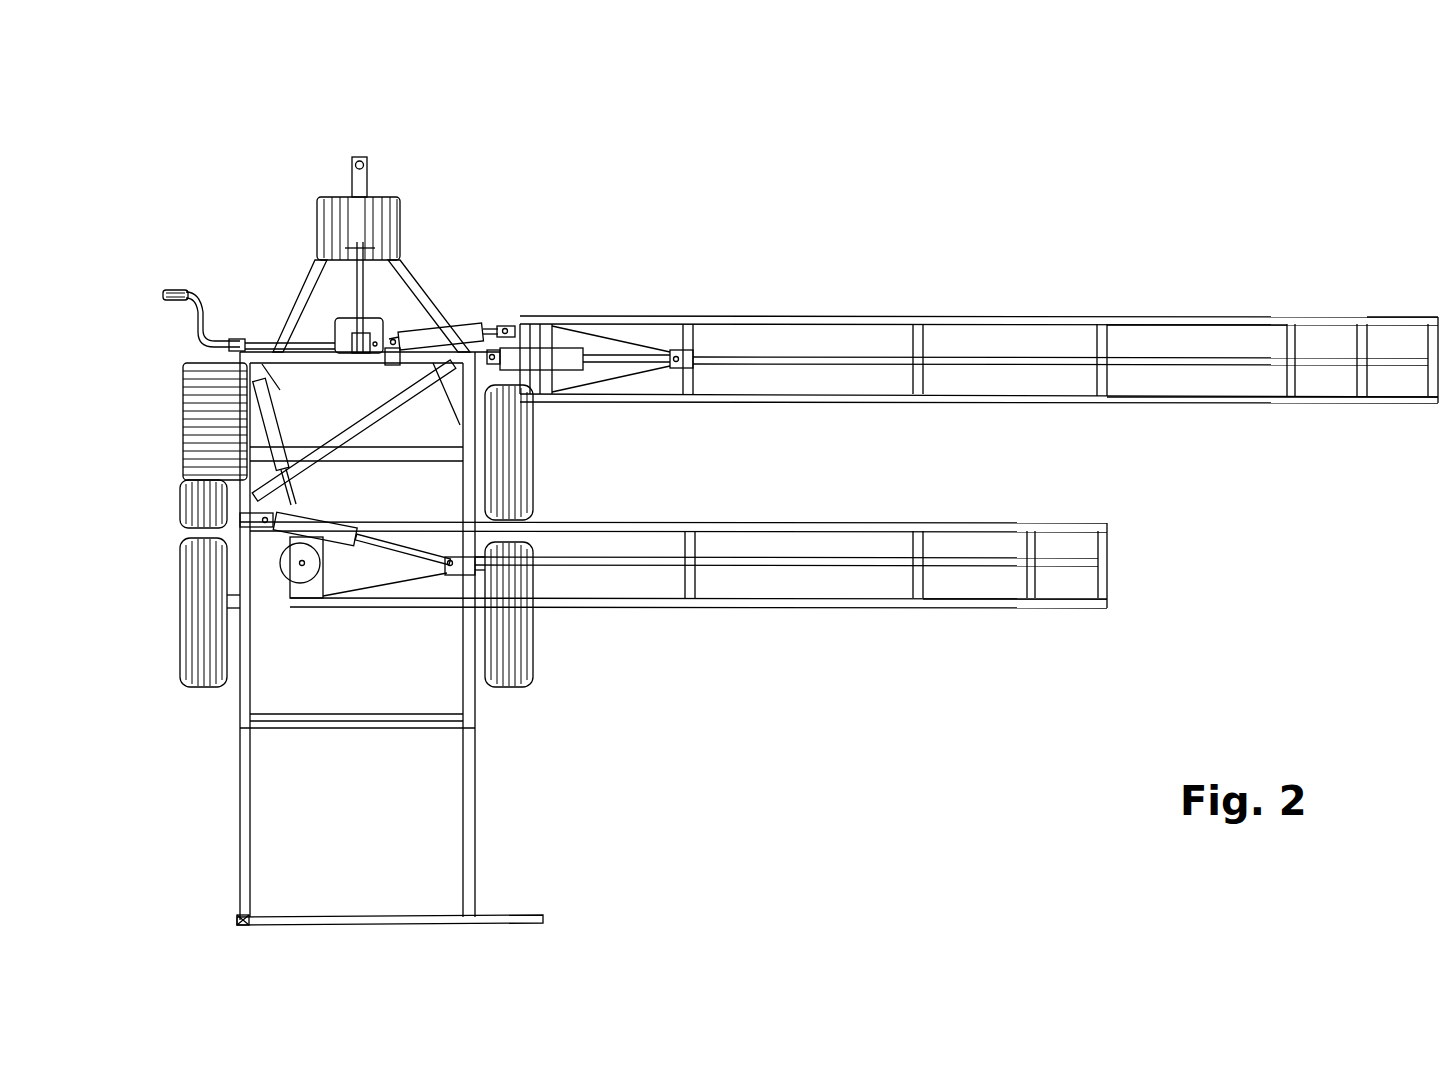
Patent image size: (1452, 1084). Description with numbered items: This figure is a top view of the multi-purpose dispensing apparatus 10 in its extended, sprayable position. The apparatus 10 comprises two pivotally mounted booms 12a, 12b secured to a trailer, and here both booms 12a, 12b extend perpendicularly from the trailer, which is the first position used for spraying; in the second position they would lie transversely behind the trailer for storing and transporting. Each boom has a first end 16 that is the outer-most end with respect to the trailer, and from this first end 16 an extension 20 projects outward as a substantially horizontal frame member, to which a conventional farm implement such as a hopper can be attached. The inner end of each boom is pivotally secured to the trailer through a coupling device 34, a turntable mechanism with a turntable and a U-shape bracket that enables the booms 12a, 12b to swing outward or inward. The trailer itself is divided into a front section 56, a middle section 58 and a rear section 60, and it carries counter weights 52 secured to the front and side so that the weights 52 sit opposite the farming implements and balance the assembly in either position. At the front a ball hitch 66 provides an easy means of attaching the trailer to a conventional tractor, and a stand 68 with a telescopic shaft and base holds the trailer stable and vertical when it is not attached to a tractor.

The multi-purpose dispensing apparatus 10 is at (1141, 192).
The first end 16 is at (1354, 303).
The extension 20 is at (1402, 402).
The boom 12a is at (804, 618).
The boom 12b is at (830, 410).
The coupling device 34 is at (508, 314).
The counter weights 52 is at (396, 208).
The front section 56 is at (290, 280).
The middle section 58 is at (186, 530).
The rear section 60 is at (487, 820).
The ball hitch 66 is at (364, 156).
The stand 68 is at (380, 320).